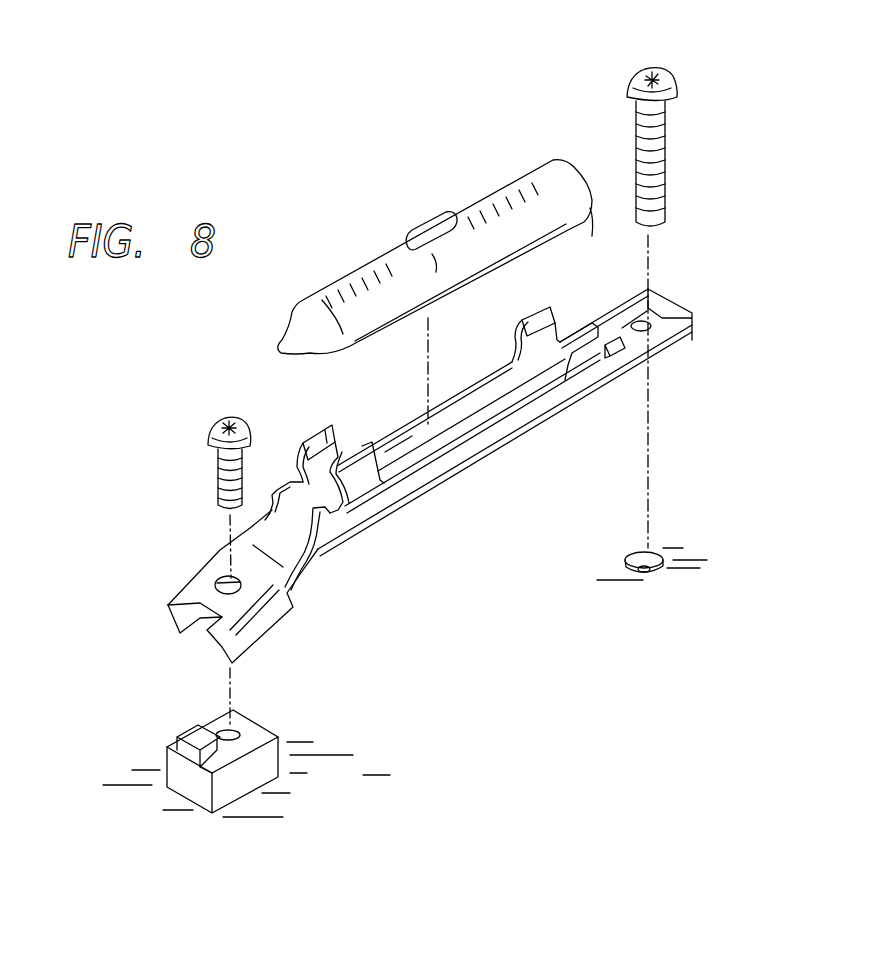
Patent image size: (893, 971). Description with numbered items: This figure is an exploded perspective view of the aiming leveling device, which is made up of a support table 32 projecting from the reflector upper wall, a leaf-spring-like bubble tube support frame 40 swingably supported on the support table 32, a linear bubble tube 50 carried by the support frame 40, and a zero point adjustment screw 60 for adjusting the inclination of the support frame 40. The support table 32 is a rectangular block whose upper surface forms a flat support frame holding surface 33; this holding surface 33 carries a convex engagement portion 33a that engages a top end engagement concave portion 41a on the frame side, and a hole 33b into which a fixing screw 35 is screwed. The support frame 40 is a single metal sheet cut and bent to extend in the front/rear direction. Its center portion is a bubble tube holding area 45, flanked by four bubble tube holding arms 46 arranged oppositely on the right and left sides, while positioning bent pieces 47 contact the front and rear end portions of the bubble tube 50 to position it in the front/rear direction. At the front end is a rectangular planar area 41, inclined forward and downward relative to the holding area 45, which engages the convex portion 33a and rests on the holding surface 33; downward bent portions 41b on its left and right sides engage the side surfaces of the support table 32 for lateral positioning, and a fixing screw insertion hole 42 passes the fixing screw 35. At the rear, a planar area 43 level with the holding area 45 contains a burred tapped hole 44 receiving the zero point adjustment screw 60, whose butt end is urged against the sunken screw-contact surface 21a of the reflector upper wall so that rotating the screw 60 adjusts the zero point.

The screw-contact surface 21a is at (660, 568).
The support table 32 is at (235, 736).
The support frame holding surface 33 is at (240, 752).
The convex engagement portion 33a is at (190, 727).
The hole 33b is at (247, 720).
The fixing screw 35 is at (212, 425).
The bubble tube support frame 40 is at (400, 448).
The rectangular planar area 41 is at (222, 564).
The top end engagement concave portion 41a is at (182, 600).
The downward bent portions 41b is at (175, 628).
The fixing screw insertion hole 42 is at (220, 582).
The planar area 43 is at (659, 312).
The tapped hole 44 is at (640, 320).
The bubble tube holding area 45 is at (412, 434).
The bubble tube holding arms 46 is at (527, 322).
The positioning bent pieces 47 is at (575, 322).
The linear bubble tube 50 is at (427, 220).
The zero point adjustment screw 60 is at (650, 58).